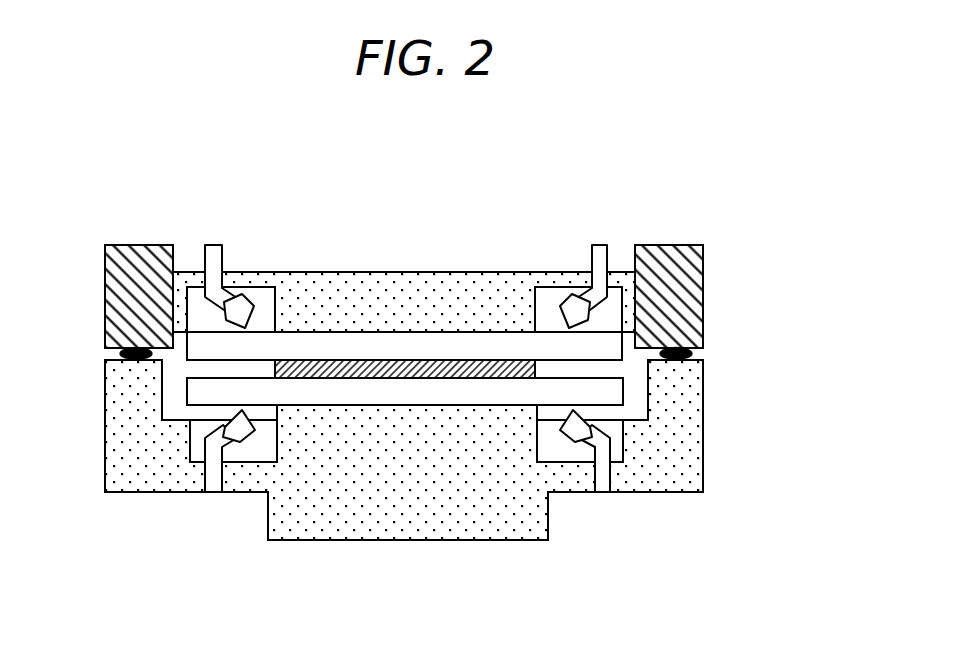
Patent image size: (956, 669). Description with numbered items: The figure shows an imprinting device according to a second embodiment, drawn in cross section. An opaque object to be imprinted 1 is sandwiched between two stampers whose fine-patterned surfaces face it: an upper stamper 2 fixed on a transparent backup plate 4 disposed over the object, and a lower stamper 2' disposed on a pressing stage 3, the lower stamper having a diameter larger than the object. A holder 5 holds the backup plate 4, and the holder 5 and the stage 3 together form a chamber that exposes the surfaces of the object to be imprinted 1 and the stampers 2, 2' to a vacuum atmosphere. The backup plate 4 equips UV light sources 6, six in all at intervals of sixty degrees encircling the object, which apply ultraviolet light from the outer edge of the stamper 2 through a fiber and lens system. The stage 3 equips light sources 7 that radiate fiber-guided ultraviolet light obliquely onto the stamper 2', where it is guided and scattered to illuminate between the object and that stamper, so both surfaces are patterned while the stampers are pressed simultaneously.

The object to be imprinted 1 is at (332, 360).
The stamper 2 is at (418, 266).
The stamper 2' is at (475, 385).
The pressing stage 3 is at (478, 450).
The transparent backup plate 4 is at (518, 300).
The holder 5 is at (677, 303).
The UV light source 6 is at (212, 245).
The light source 7 is at (205, 427).